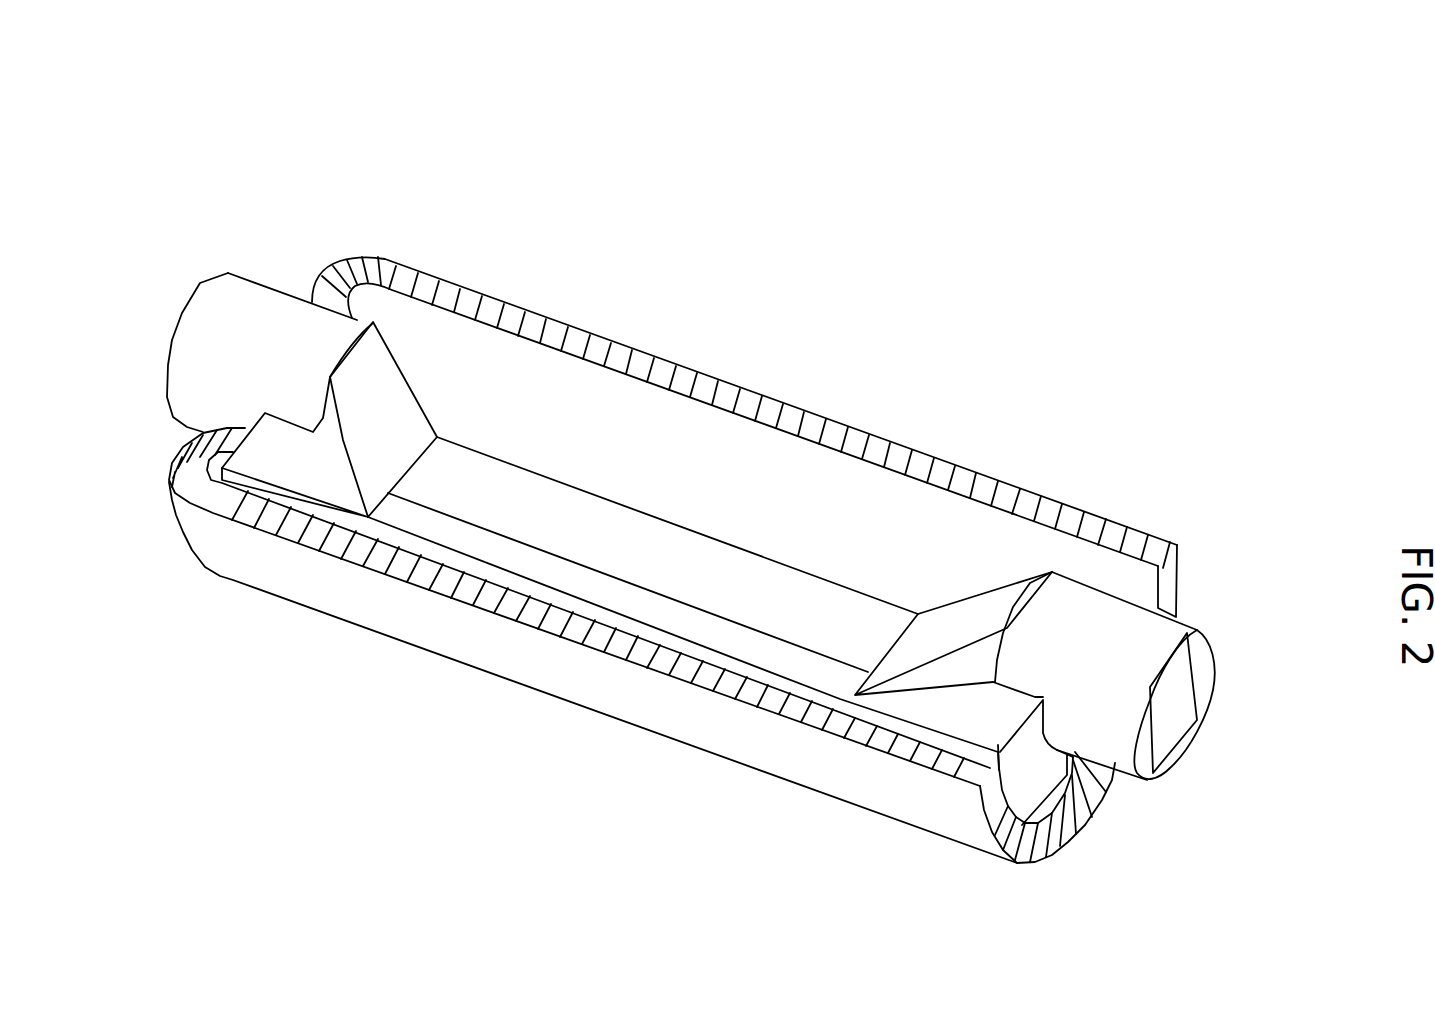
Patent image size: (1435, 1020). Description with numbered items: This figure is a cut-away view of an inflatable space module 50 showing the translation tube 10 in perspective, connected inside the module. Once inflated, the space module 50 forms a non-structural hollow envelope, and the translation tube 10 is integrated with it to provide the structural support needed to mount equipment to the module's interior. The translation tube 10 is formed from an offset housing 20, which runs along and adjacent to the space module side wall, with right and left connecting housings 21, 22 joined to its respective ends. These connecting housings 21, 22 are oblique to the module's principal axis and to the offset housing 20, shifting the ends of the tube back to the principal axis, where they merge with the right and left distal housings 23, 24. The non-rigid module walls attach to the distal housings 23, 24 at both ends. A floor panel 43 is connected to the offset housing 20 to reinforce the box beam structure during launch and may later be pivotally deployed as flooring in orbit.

The translation tube 10 is at (1243, 763).
The offset housing 20 is at (748, 592).
The right connecting housing 21 is at (918, 615).
The left connecting housing 22 is at (410, 388).
The right distal housing 23 is at (1176, 617).
The left distal housing 24 is at (247, 280).
The floor panel 43 is at (603, 593).
The space module 50 is at (672, 360).